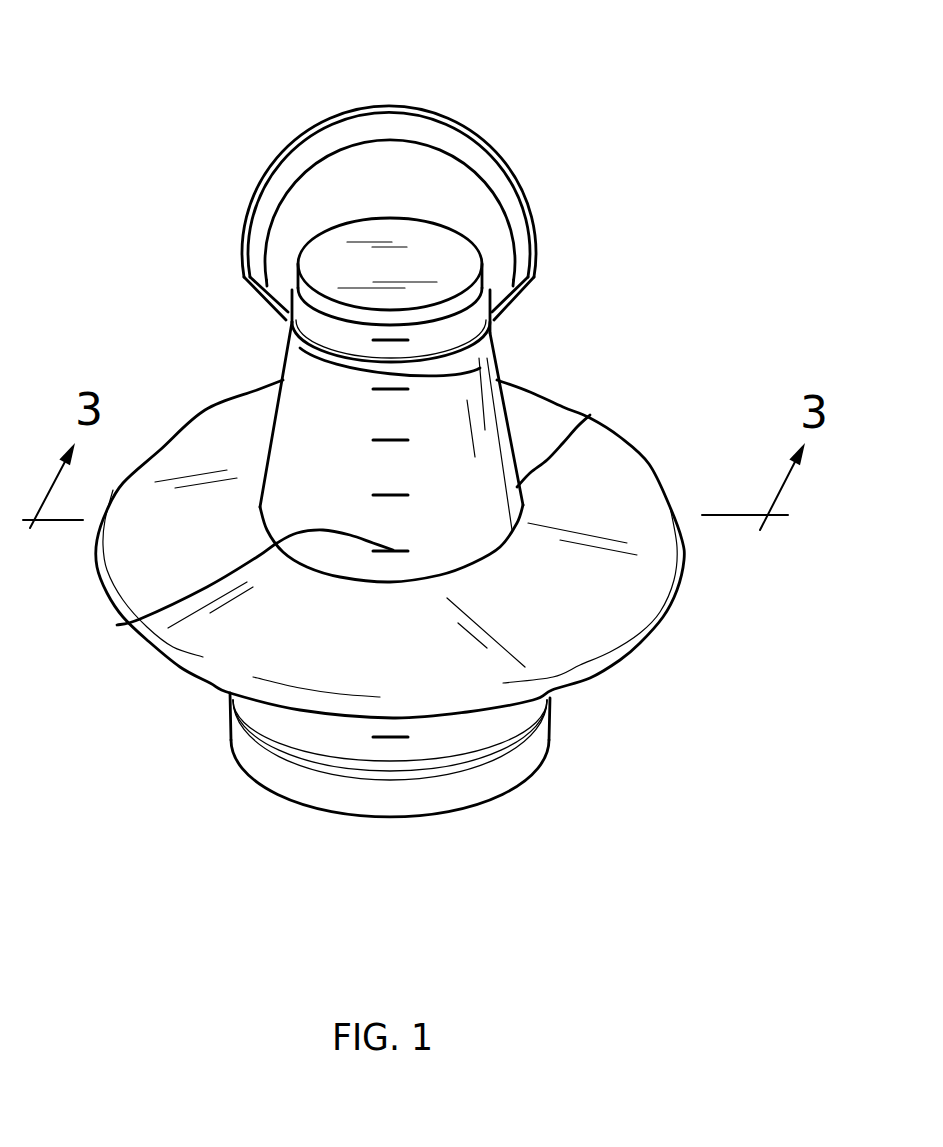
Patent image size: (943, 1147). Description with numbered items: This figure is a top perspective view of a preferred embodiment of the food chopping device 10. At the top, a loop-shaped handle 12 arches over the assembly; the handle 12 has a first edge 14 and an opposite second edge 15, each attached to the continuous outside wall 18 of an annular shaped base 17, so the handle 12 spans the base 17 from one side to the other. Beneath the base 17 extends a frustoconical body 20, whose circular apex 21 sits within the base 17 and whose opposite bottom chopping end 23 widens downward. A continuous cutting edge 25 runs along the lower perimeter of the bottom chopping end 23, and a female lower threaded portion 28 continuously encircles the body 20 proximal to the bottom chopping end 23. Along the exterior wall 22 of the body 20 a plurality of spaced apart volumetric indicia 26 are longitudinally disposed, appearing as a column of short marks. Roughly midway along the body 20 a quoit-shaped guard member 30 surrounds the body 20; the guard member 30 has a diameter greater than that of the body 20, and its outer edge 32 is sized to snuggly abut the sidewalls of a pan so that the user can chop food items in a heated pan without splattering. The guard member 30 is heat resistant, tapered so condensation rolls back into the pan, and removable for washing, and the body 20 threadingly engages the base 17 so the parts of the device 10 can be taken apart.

The food chopping device 10 is at (149, 345).
The handle 12 is at (469, 133).
The first edge 14 is at (500, 313).
The second edge 15 is at (282, 316).
The base 17 is at (497, 358).
The outside wall 18 is at (335, 357).
The frustoconical body 20 is at (502, 397).
The apex 21 is at (443, 258).
The exterior wall 22 is at (590, 417).
The bottom chopping end 23 is at (512, 763).
The cutting edge 25 is at (472, 805).
The volumetric indicia 26 is at (117, 625).
The lower threaded portion 28 is at (555, 698).
The guard member 30 is at (623, 472).
The outer edge 32 is at (681, 593).